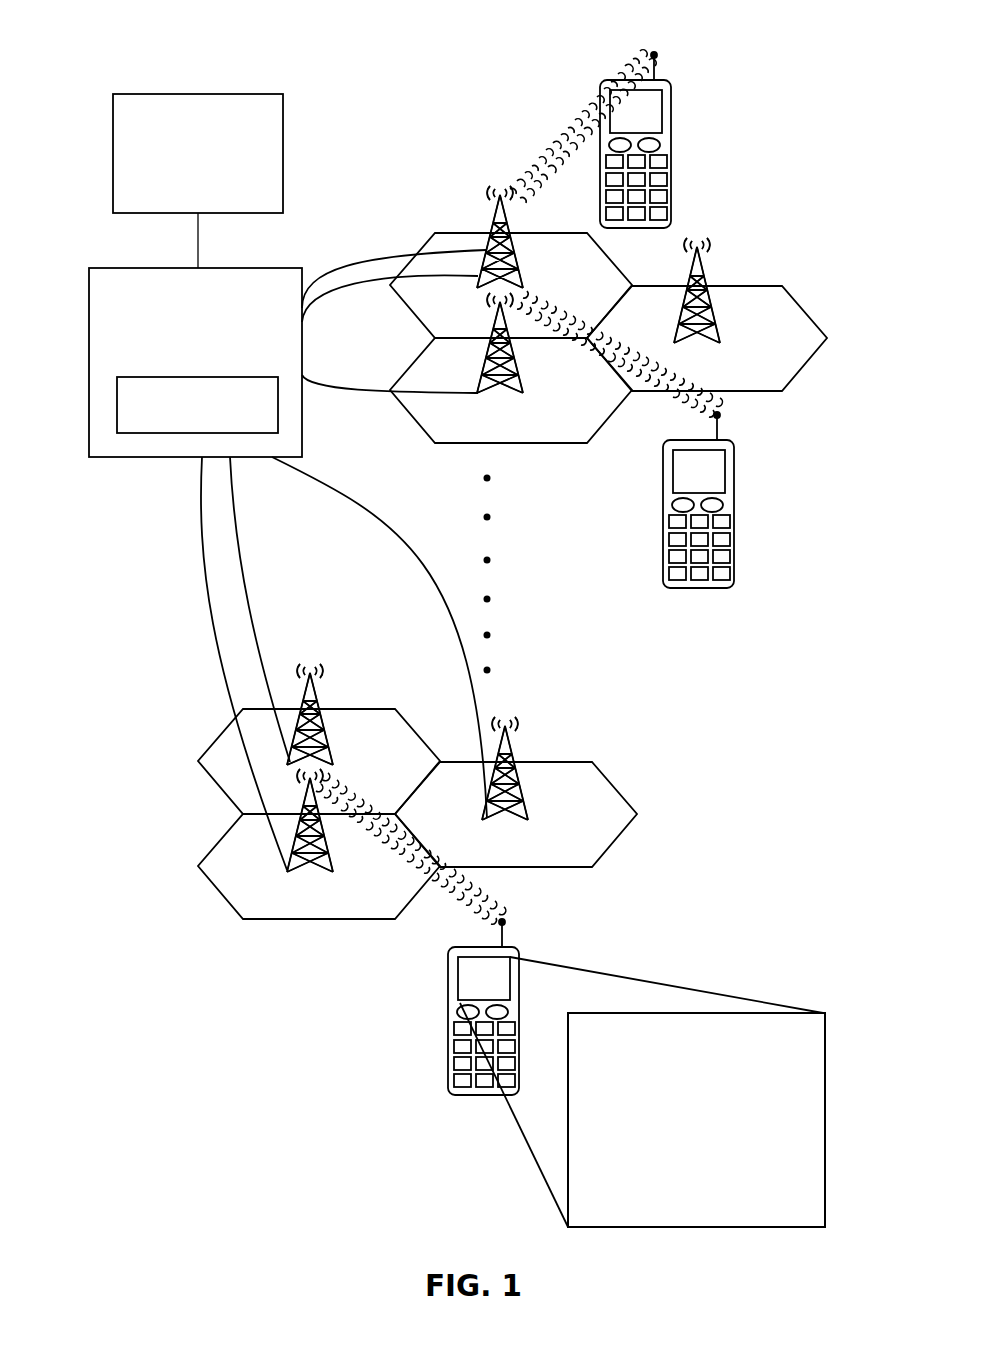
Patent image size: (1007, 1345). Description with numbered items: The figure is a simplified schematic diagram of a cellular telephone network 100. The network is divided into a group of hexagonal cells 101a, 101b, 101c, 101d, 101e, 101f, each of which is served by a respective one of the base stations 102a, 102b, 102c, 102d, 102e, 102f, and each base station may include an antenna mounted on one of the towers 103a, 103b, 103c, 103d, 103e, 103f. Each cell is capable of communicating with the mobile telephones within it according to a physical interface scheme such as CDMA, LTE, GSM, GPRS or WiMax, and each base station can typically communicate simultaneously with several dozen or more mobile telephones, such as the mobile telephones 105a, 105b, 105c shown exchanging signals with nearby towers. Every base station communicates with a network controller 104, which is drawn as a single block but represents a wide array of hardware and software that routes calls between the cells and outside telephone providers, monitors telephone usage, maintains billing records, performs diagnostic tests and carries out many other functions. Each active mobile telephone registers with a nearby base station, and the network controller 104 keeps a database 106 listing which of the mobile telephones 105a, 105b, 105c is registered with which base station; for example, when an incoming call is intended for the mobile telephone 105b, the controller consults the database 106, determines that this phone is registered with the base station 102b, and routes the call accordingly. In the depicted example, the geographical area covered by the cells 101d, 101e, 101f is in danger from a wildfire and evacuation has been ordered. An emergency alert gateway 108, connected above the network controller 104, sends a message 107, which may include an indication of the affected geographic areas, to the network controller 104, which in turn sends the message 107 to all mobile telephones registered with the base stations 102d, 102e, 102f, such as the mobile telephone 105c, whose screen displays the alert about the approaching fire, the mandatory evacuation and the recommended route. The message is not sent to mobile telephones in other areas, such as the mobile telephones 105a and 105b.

The cellular telephone network 100 is at (170, 42).
The emergency alert gateway 108 is at (117, 150).
The network controller 104 is at (109, 268).
The database 106 is at (147, 420).
The cell 101a is at (440, 242).
The cell 101b is at (437, 412).
The cell 101c is at (772, 375).
The cell 101d is at (223, 758).
The cell 101e is at (232, 872).
The cell 101f is at (582, 852).
The base station 102a is at (525, 278).
The base station 102b is at (502, 395).
The base station 102c is at (722, 330).
The base station 102d is at (337, 750).
The base station 102e is at (312, 877).
The base station 102f is at (533, 807).
The tower 103a is at (490, 225).
The tower 103b is at (495, 352).
The tower 103c is at (715, 300).
The tower 103d is at (317, 697).
The tower 103e is at (330, 853).
The tower 103f is at (523, 775).
The mobile telephone 105a is at (672, 108).
The mobile telephone 105b is at (738, 460).
The mobile telephone 105c is at (458, 1007).
The message 107 is at (812, 1040).